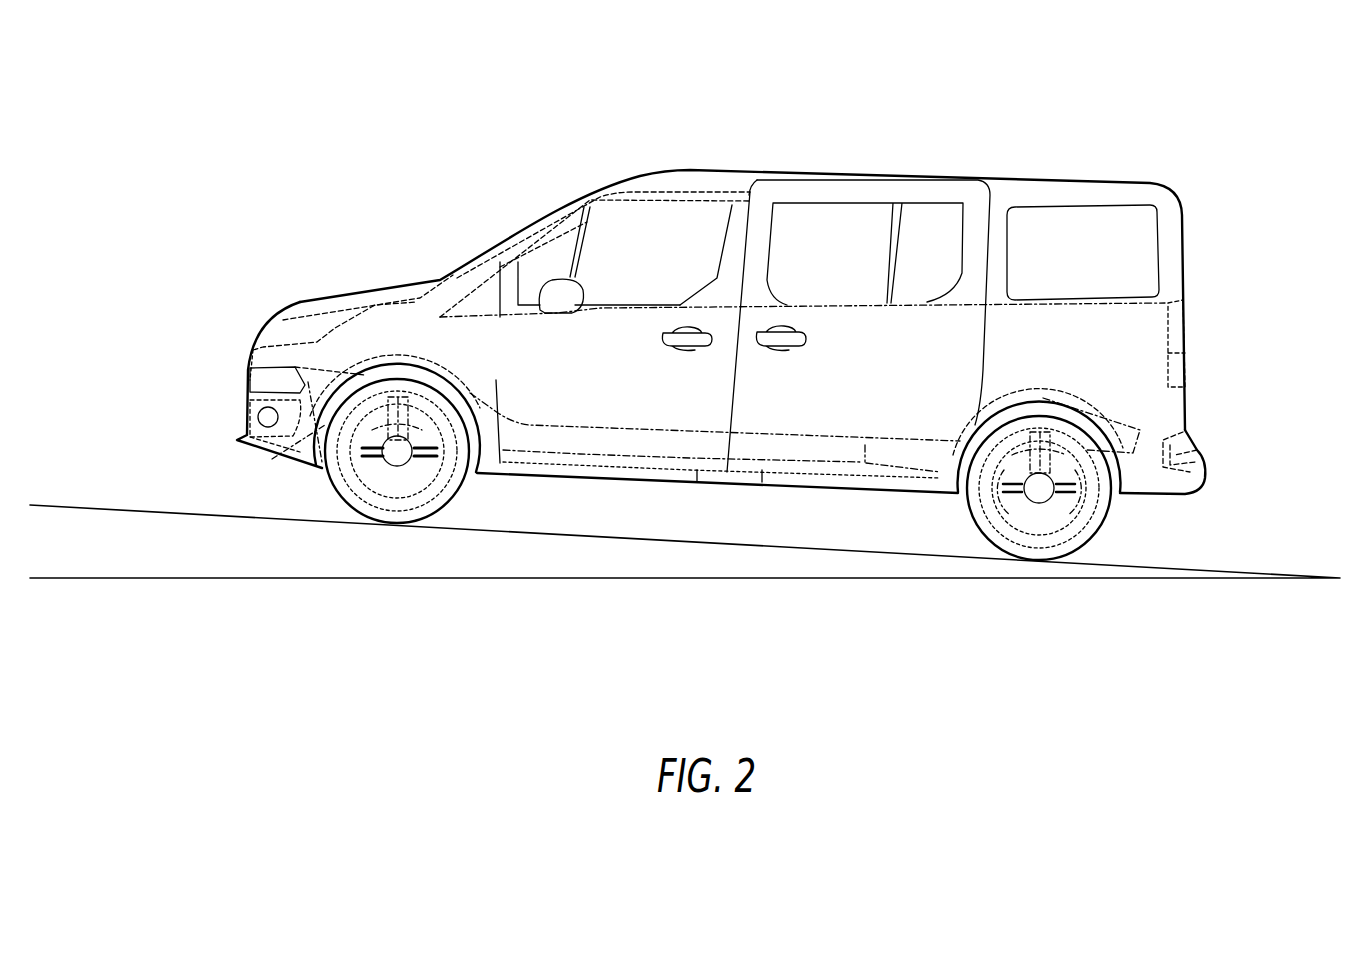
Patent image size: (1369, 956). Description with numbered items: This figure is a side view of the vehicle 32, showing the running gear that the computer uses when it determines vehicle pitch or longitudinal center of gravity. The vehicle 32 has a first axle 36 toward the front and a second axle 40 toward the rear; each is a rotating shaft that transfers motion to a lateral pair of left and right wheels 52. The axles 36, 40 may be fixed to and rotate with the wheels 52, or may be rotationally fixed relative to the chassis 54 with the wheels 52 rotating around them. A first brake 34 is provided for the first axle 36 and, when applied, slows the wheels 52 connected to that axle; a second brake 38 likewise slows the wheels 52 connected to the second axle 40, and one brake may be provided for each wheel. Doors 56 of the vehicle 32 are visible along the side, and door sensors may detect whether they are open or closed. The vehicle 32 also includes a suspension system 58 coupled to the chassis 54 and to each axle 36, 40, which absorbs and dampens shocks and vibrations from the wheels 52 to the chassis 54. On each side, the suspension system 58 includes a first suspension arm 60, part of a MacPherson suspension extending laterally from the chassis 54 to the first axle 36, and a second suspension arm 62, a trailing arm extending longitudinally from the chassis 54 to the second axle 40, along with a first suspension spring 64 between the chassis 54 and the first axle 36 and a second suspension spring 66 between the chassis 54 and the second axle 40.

The vehicle 32 is at (496, 130).
The first brake 34 is at (457, 497).
The first axle 36 is at (404, 468).
The second brake 38 is at (1087, 500).
The second axle 40 is at (1043, 497).
The wheels 52 is at (345, 503).
The chassis 54 is at (807, 478).
The doors 56 is at (762, 473).
The suspension system 58 is at (983, 423).
The first suspension arm 60 is at (370, 462).
The second suspension arm 62 is at (980, 515).
The first suspension spring 64 is at (272, 459).
The second suspension spring 66 is at (1057, 433).